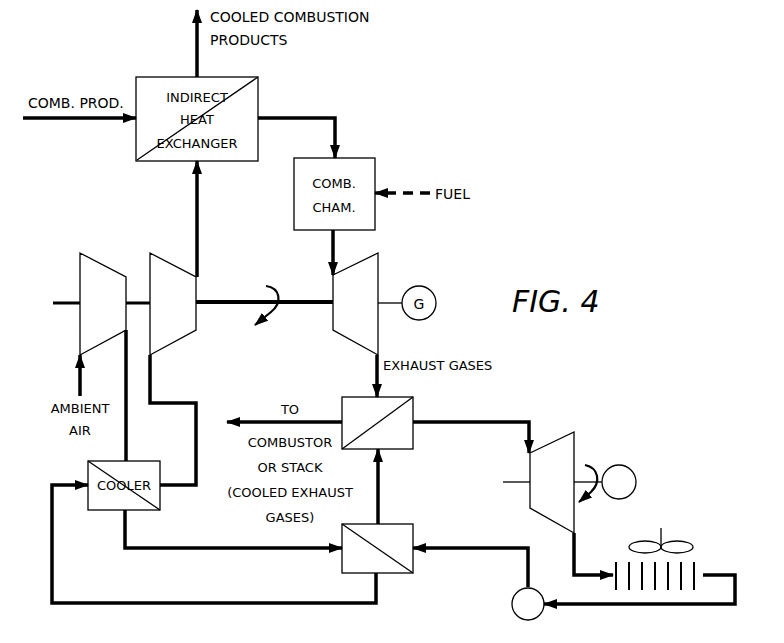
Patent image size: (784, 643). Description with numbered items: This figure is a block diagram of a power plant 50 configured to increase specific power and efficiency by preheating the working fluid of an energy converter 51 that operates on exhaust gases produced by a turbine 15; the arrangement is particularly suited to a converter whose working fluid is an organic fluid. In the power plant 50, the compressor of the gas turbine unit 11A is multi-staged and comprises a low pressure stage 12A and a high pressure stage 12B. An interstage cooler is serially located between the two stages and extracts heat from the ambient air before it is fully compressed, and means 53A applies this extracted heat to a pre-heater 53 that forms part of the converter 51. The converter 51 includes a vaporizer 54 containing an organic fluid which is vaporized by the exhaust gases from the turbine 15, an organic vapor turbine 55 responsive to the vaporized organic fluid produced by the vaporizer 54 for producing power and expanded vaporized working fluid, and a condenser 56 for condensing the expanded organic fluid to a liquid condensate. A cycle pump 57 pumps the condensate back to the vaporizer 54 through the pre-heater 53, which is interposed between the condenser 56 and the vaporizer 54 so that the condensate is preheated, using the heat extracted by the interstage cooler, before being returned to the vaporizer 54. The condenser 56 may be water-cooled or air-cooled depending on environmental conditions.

The gas turbine unit 11A is at (212, 322).
The low pressure stage 12A is at (79, 253).
The high pressure stage 12B is at (149, 253).
The turbine 15 is at (379, 258).
The power plant 50 is at (507, 253).
The energy converter 51 is at (600, 445).
The pre-heater 53 is at (413, 520).
The means for applying extracted heat 53A is at (178, 548).
The vaporizer 54 is at (413, 410).
The organic vapor turbine 55 is at (569, 432).
The condenser 56 is at (706, 565).
The cycle pump 57 is at (513, 595).